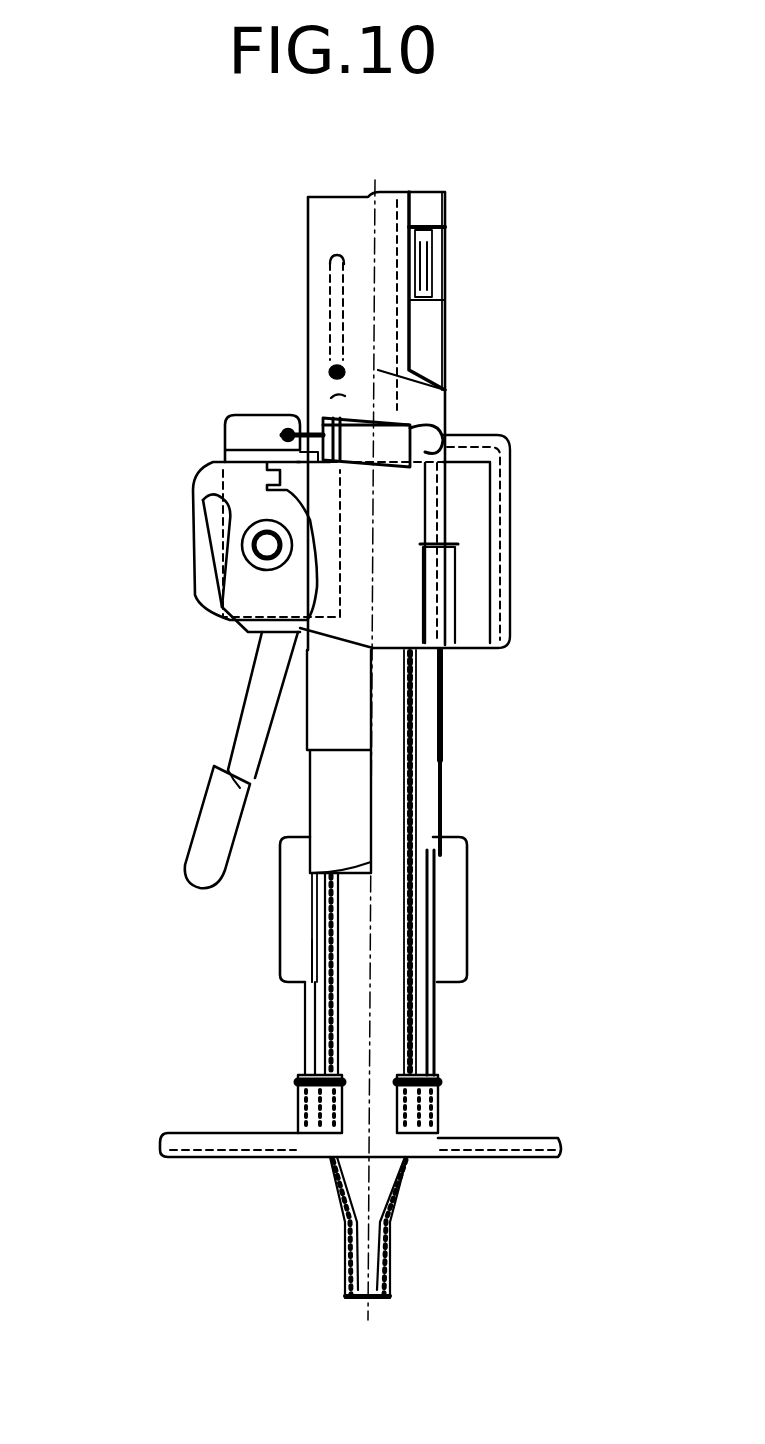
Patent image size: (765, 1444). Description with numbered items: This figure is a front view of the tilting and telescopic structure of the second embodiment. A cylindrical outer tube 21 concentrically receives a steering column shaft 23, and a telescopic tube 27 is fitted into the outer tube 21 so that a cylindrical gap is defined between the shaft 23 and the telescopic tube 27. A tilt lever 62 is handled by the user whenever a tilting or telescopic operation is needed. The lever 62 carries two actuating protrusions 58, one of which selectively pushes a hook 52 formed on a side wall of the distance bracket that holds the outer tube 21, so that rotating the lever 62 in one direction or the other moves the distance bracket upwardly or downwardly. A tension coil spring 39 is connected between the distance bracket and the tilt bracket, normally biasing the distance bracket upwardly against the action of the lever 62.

The outer tube 21 is at (443, 715).
The steering column shaft 23 is at (393, 1220).
The telescopic tube 27 is at (435, 1028).
The tension coil spring 39 is at (410, 427).
The hook 52 is at (257, 432).
The actuating protrusion 58 is at (213, 464).
The tilt lever 62 is at (241, 737).